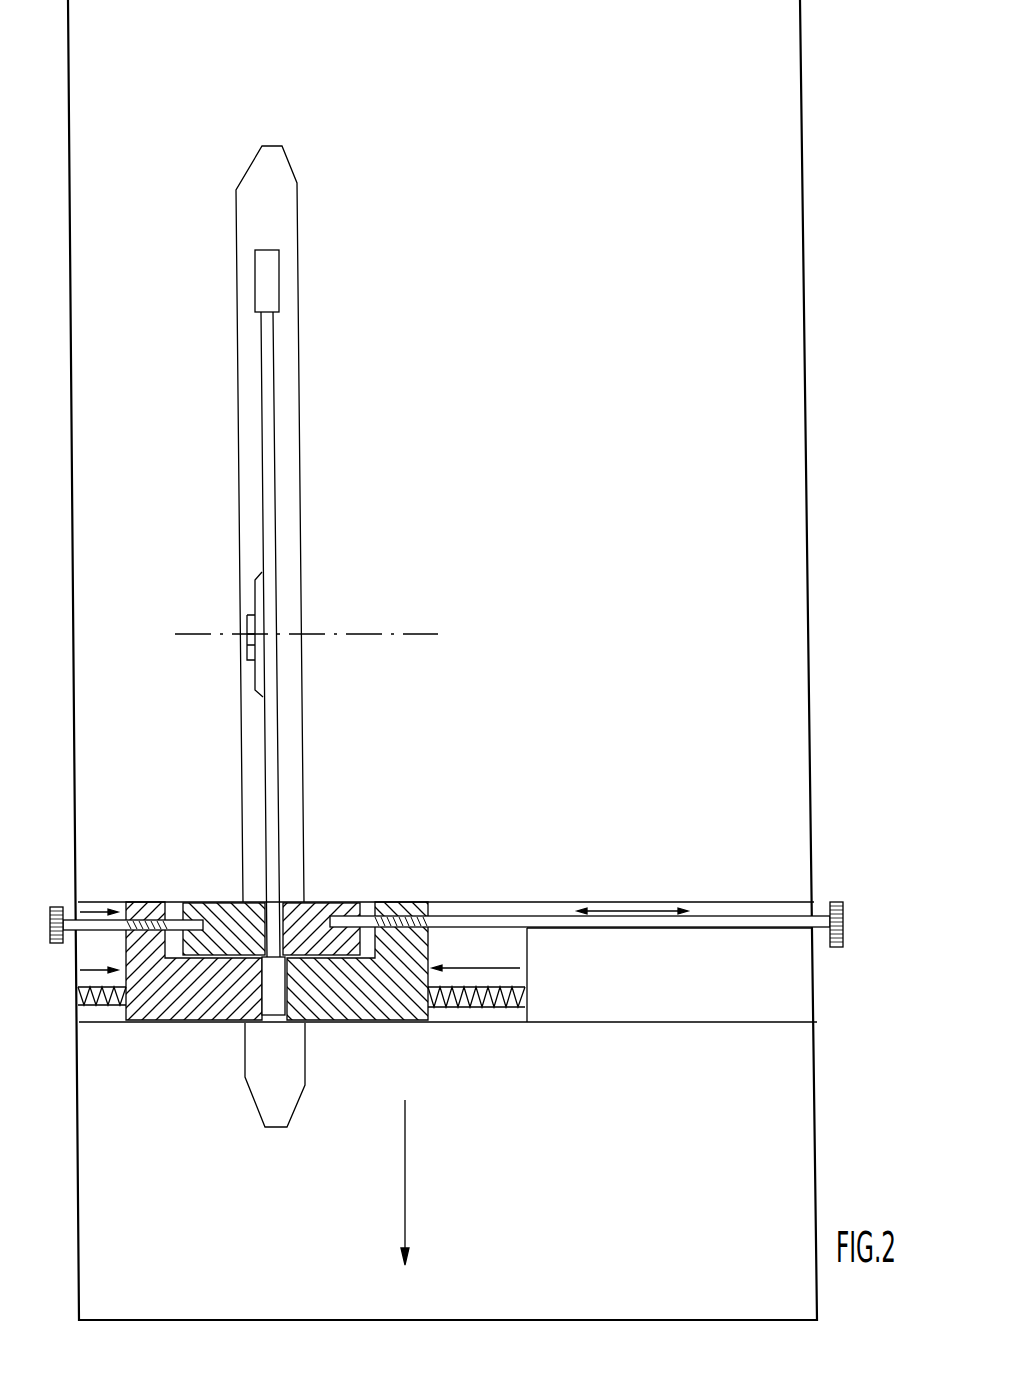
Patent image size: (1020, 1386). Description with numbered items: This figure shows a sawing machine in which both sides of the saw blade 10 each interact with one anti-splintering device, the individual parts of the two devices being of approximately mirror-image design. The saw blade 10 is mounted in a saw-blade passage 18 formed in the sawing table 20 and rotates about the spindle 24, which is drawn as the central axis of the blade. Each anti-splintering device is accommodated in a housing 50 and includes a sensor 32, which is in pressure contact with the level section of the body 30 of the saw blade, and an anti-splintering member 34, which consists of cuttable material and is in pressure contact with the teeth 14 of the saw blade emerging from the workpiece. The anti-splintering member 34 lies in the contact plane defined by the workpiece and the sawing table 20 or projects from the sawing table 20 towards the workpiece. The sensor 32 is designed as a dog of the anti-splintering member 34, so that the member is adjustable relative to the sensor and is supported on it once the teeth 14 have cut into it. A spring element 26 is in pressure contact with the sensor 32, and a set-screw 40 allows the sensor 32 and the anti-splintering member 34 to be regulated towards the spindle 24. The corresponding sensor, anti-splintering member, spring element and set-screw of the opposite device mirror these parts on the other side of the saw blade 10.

The saw blade 10 is at (290, 369).
The teeth of the saw blade 14 is at (275, 1018).
The saw-blade passage 18 is at (298, 218).
The sawing table 20 is at (802, 207).
The spindle 24 is at (418, 633).
The spring element 26 is at (497, 1023).
The body of the saw blade 30 is at (274, 470).
The sensor 32 is at (330, 901).
The anti-splintering member 34 is at (368, 1023).
The set-screw 40 is at (843, 948).
The housing 50 is at (537, 901).